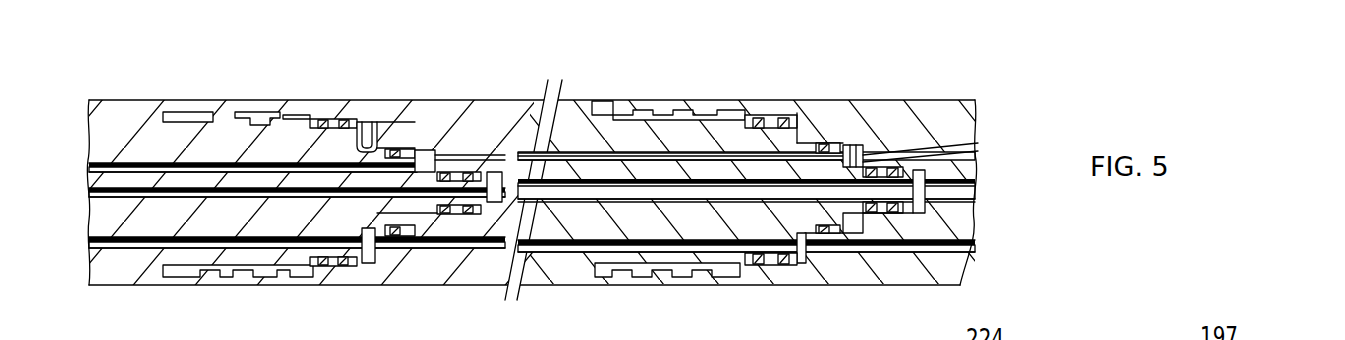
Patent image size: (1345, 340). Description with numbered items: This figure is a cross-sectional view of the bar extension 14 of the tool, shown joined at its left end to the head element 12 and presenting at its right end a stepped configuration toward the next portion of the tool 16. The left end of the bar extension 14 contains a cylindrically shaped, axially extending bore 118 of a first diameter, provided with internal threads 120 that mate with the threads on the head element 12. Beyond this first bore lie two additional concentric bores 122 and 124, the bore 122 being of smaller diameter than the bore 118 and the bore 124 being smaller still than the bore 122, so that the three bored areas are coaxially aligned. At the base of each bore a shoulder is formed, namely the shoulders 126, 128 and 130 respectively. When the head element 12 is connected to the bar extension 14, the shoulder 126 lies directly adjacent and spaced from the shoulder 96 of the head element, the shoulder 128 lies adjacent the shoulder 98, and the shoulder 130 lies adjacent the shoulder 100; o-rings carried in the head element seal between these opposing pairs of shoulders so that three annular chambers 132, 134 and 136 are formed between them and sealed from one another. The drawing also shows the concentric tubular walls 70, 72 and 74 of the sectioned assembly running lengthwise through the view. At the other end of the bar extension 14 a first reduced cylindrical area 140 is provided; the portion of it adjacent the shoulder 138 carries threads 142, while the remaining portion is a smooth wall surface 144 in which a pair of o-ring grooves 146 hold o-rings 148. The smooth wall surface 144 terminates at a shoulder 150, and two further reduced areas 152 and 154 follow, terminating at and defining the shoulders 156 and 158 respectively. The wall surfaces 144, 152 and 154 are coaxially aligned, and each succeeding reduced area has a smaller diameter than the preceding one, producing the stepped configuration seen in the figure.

The head element 12 is at (125, 82).
The bar extension 14 is at (462, 38).
The second tubular assembly 16 is at (980, 77).
The outer tube 70 is at (574, 97).
The intermediate tube 72 is at (135, 200).
The lower tube 74 is at (130, 250).
The shoulder 96 is at (367, 237).
The shoulder 98 is at (419, 228).
The shoulder 100 is at (512, 197).
The cylindrical bore 118 is at (183, 118).
The internal threads 120 is at (256, 125).
The bore 122 is at (366, 140).
The bore 124 is at (503, 207).
The shoulder 126 is at (368, 263).
The shoulder 128 is at (420, 247).
The shoulder 130 is at (497, 173).
The annular chamber 132 is at (370, 135).
The annular chamber 134 is at (427, 162).
The annular chamber 136 is at (497, 176).
The shoulder 138 is at (605, 276).
The first reduced cylindrical area 140 is at (592, 122).
The threads 142 is at (632, 272).
The smooth wall surface 144 is at (740, 117).
The o-ring grooves 146 is at (760, 260).
The o-rings 148 is at (783, 262).
The shoulder 150 is at (805, 140).
The reduced area 152 is at (803, 240).
The reduced area 154 is at (855, 170).
The shoulder 156 is at (863, 228).
The shoulder 158 is at (925, 205).